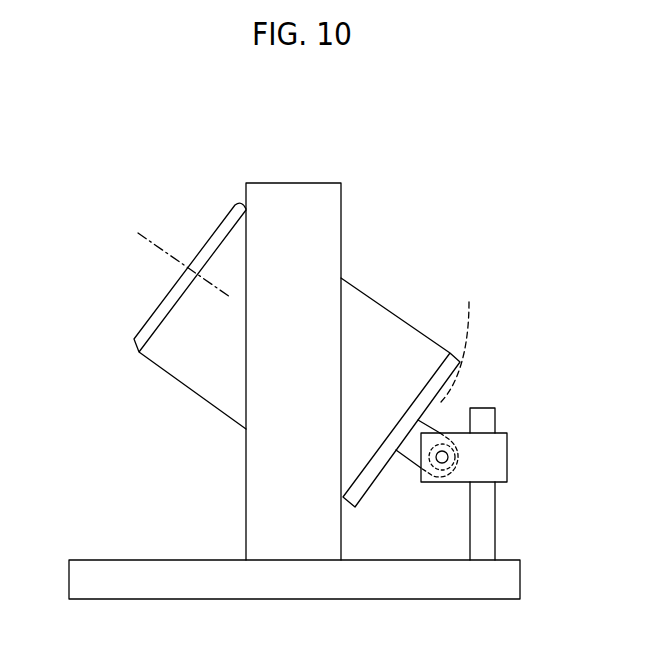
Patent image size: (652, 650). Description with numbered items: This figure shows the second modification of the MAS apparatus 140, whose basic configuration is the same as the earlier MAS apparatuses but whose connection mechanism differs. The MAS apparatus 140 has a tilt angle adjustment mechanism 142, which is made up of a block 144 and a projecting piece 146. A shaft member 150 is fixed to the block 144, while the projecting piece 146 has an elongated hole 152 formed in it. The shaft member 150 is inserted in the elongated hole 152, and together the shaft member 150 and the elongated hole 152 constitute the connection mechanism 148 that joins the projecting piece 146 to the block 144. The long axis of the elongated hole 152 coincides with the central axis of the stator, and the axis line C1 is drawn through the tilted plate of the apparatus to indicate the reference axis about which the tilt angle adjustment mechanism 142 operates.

The MAS apparatus 140 is at (205, 161).
The rotation axis C1 is at (169, 255).
The tilt angle adjustment mechanism 142 is at (478, 378).
The block 144 is at (472, 457).
The projecting piece 146 is at (426, 444).
The connection mechanism 148 is at (507, 459).
The shaft member 150 is at (438, 464).
The elongated hole 152 is at (463, 337).